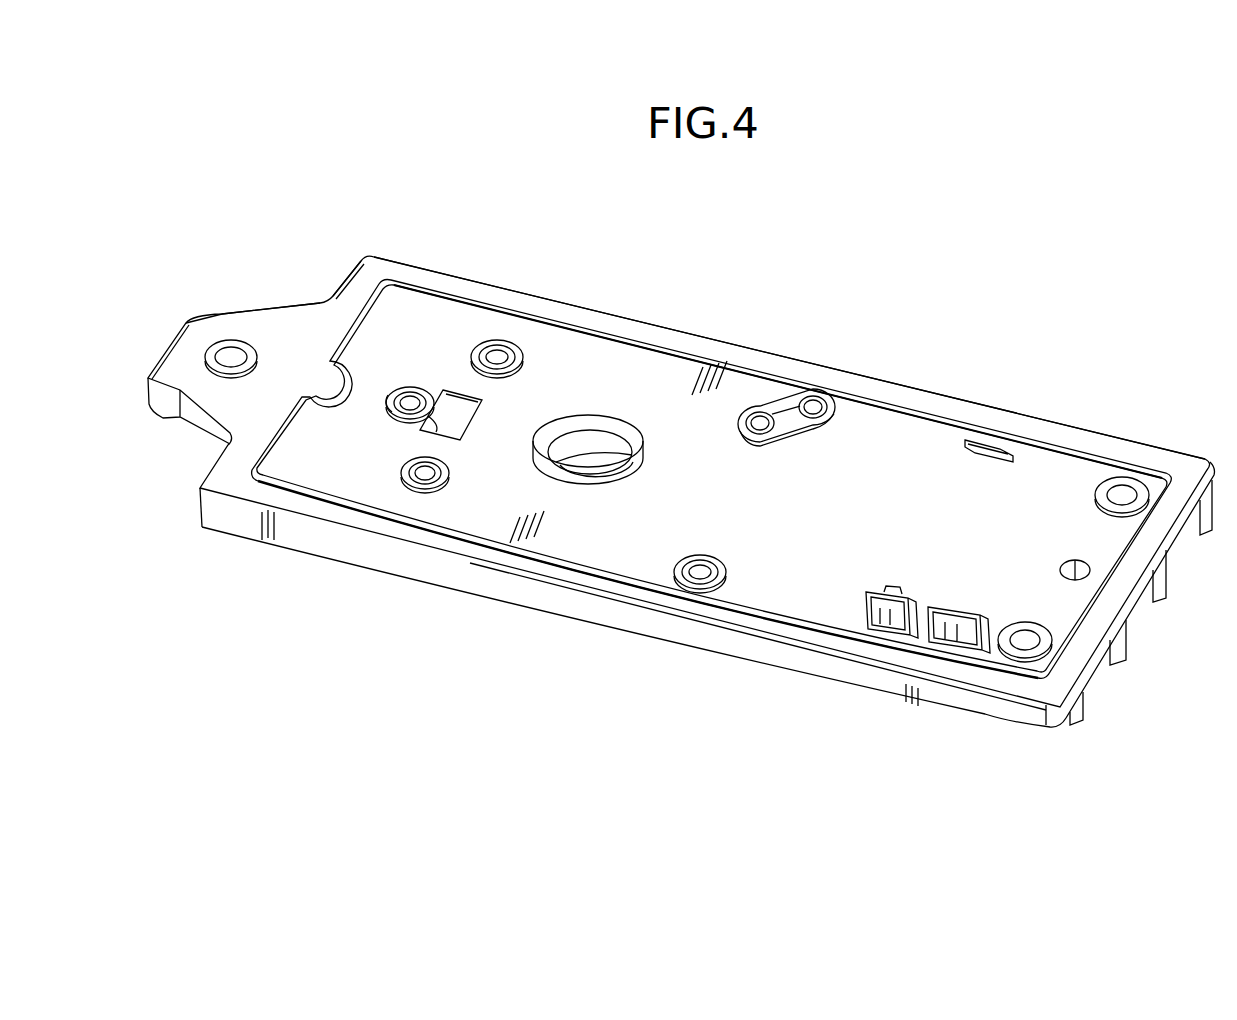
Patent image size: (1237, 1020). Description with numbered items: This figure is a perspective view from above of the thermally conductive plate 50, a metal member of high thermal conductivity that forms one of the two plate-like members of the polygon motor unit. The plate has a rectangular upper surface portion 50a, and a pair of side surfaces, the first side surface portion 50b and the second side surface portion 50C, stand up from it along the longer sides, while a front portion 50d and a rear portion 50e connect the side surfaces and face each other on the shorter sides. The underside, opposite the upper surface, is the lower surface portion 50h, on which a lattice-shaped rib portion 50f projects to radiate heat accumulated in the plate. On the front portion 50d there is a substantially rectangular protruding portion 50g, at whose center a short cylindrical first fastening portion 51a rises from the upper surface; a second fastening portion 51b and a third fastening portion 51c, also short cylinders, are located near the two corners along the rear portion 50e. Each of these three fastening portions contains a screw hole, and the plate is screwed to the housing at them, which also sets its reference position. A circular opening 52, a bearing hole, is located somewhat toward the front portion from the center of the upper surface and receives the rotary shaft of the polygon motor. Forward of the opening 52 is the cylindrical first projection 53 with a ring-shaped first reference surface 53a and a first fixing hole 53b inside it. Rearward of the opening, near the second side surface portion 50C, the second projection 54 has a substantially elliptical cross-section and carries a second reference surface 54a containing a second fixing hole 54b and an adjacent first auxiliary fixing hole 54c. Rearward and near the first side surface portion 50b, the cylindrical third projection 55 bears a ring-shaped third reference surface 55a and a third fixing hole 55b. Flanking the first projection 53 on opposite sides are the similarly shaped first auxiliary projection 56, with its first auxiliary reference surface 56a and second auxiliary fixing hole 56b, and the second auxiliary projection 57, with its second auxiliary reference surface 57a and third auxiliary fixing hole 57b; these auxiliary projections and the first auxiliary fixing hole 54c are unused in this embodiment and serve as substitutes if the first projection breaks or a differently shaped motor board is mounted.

The thermally conductive plate 50 is at (317, 578).
The upper surface portion 50a is at (487, 514).
The first side surface portion 50b is at (642, 626).
The second side surface portion 50C is at (764, 352).
The front portion 50d is at (334, 296).
The rear portion 50e is at (1138, 607).
The rib portion 50f is at (1118, 658).
The protruding portion 50g is at (200, 322).
The lower surface portion 50h is at (556, 602).
The first fastening portion 51a is at (229, 364).
The second fastening portion 51b is at (1123, 494).
The third fastening portion 51c is at (1023, 650).
The opening 52 is at (590, 432).
The first projection 53 is at (410, 400).
The first reference surface 53a is at (389, 402).
The first fixing hole 53b is at (410, 406).
The second projection 54 is at (795, 437).
The second reference surface 54a is at (800, 425).
The second fixing hole 54b is at (818, 411).
The first auxiliary fixing hole 54c is at (759, 427).
The third projection 55 is at (720, 579).
The third reference surface 55a is at (720, 567).
The third fixing hole 55b is at (700, 570).
The first auxiliary projection 56 is at (448, 479).
The first auxiliary reference surface 56a is at (401, 476).
The second auxiliary fixing hole 56b is at (428, 472).
The second auxiliary projection 57 is at (523, 353).
The second auxiliary reference surface 57a is at (516, 366).
The third auxiliary fixing hole 57b is at (497, 355).